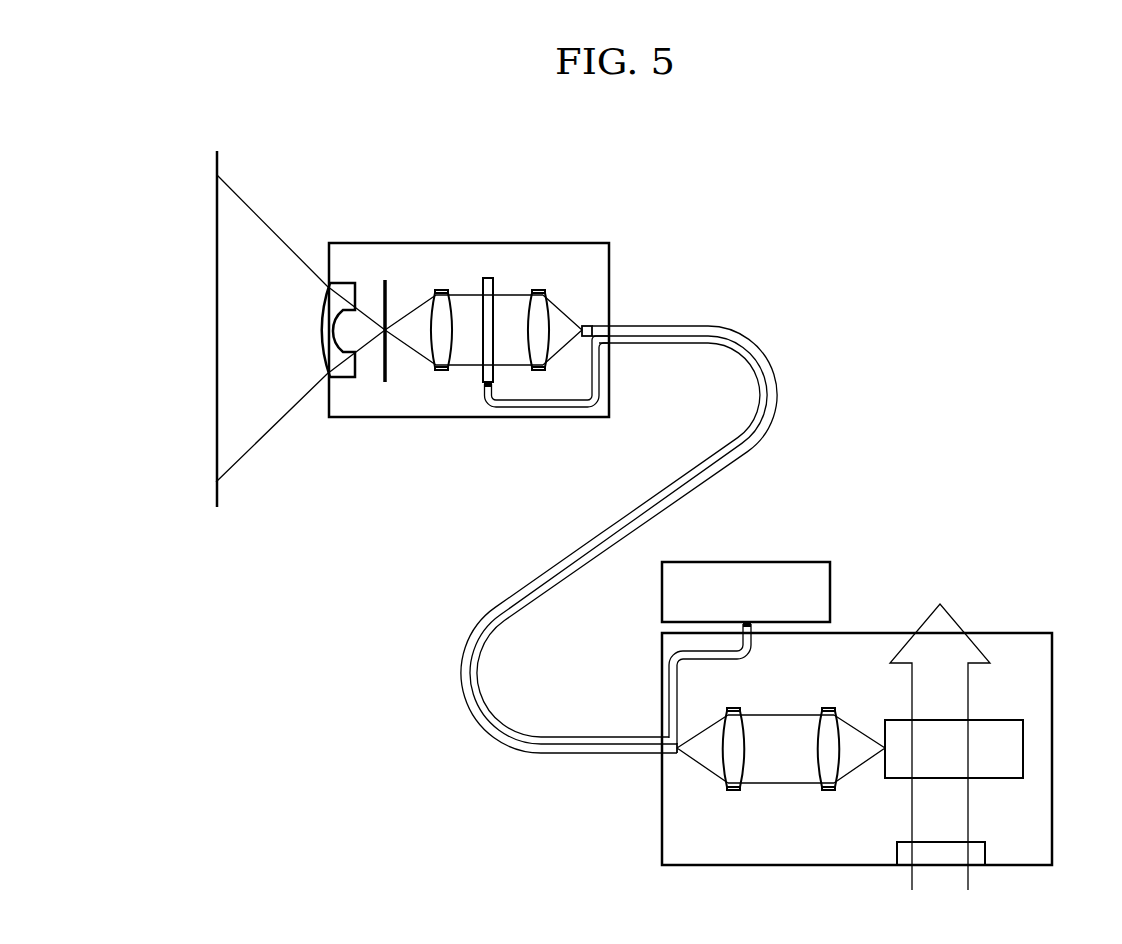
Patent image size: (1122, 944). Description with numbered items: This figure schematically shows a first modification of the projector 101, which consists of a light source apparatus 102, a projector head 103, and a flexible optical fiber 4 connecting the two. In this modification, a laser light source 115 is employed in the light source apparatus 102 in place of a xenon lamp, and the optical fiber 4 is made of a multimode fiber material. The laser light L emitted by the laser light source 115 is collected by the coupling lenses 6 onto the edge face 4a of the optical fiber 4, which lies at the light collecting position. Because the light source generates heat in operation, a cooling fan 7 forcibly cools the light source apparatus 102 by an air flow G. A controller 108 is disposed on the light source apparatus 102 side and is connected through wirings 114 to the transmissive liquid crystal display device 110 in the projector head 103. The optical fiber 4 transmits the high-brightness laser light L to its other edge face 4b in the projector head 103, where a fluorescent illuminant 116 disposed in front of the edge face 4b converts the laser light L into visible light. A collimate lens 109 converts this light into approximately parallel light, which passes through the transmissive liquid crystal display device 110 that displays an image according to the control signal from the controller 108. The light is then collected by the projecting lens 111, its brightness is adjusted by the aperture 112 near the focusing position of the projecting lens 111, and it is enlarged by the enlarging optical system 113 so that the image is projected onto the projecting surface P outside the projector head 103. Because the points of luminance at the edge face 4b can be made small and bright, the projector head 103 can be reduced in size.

The projector 101 is at (842, 154).
The light source apparatus 102 is at (876, 633).
The projector head 103 is at (562, 243).
The optical fiber 4 is at (778, 395).
The edge face 4a is at (682, 759).
The edge face 4b is at (586, 337).
The coupling lenses 6 is at (733, 791).
The cooling fan 7 is at (987, 848).
The controller 108 is at (800, 562).
The collimate lens 109 is at (536, 290).
The transmissive liquid crystal display device 110 is at (489, 278).
The projecting lens 111 is at (437, 371).
The aperture 112 is at (383, 280).
The enlarging optical system 113 is at (340, 282).
The wirings 114 is at (573, 576).
The laser light source 115 is at (1000, 753).
The fluorescent illuminant 116 is at (589, 325).
The air flow G is at (968, 675).
The laser light L is at (785, 786).
The projecting surface P is at (218, 492).